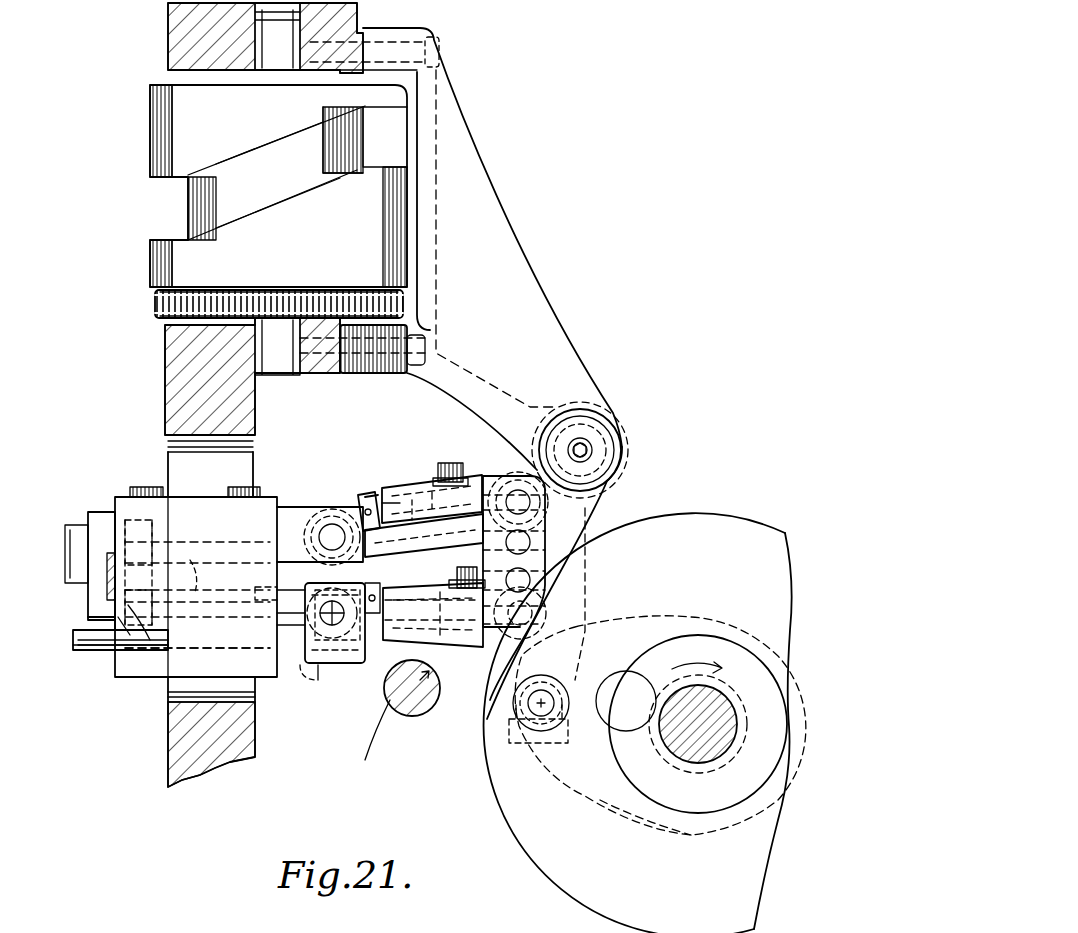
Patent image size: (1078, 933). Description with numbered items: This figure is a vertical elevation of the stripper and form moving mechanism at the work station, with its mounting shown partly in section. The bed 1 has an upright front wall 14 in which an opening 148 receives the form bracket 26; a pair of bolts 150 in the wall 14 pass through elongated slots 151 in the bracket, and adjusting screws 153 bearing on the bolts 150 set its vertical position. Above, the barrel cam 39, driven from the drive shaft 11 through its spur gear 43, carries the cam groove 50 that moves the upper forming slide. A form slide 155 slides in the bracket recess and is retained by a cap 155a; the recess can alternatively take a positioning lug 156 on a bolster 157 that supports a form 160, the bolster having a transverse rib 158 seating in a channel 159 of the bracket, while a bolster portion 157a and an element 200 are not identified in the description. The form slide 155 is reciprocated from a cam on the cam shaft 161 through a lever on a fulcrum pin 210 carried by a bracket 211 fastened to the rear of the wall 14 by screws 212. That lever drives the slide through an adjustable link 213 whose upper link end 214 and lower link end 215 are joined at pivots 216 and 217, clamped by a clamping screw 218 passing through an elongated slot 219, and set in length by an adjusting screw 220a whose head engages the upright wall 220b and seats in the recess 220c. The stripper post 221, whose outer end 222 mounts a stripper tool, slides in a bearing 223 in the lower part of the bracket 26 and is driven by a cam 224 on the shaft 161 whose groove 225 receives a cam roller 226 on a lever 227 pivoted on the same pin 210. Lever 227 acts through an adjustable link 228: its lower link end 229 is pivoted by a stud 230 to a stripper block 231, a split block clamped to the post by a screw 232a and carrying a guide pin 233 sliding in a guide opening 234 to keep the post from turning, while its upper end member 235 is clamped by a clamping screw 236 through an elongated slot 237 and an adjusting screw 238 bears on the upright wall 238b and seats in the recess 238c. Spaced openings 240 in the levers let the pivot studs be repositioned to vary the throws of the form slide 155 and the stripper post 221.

The bed 1 is at (156, 407).
The drive shaft 11 is at (435, 703).
The upright front wall 14 is at (165, 378).
The form bracket 26 is at (175, 683).
The barrel cam 39 is at (150, 115).
The spur gear 43 is at (155, 310).
The cam groove 50 is at (250, 190).
The opening 148 is at (240, 455).
The bolts 150 is at (196, 568).
The elongated slots 151 is at (108, 583).
The adjusting screws 153 is at (140, 572).
The form slide 155 is at (297, 507).
The cap 155a is at (210, 474).
The positioning lug 156 is at (135, 490).
The supporting bolster 157 is at (98, 514).
The slide housing 157a is at (218, 545).
The transverse rib 158 is at (130, 650).
The groove 159 is at (152, 650).
The form 160 is at (70, 557).
The cam shaft 161 is at (700, 763).
The cylinder rod end 200 is at (382, 503).
The fulcrum pin 210 is at (598, 440).
The bracket 211 is at (500, 253).
The screws 212 is at (445, 45).
The adjustable link 213 is at (422, 483).
The upper link end 214 is at (382, 490).
The lower link end 215 is at (425, 588).
The pivot 216 is at (518, 502).
The pivot 217 is at (334, 530).
The clamping screw 218 is at (452, 462).
The elongated slot 219 is at (482, 483).
The adjusting screw 220a is at (365, 498).
The upright wall 220b is at (360, 500).
The recess 220c is at (375, 535).
The stripper post 221 is at (95, 650).
The outer end 222 is at (73, 645).
The bearing 223 is at (222, 652).
The cam 224 is at (512, 832).
The cam groove 225 is at (592, 800).
The cam roller 226 is at (570, 680).
The lever 227 is at (603, 512).
The adjustable link 228 is at (445, 667).
The lower link end 229 is at (380, 712).
The stud 230 is at (305, 625).
The stripper block 231 is at (345, 685).
The screw 232a is at (395, 632).
The guide pin 233 is at (290, 600).
The guide opening 234 is at (245, 596).
The upper end member 235 is at (448, 582).
The clamping screw 236 is at (506, 578).
The elongated slot 237 is at (483, 606).
The adjusting screw 238 is at (376, 614).
The upright wall 238b is at (375, 582).
The recess 238c is at (330, 668).
The openings 240 is at (528, 542).